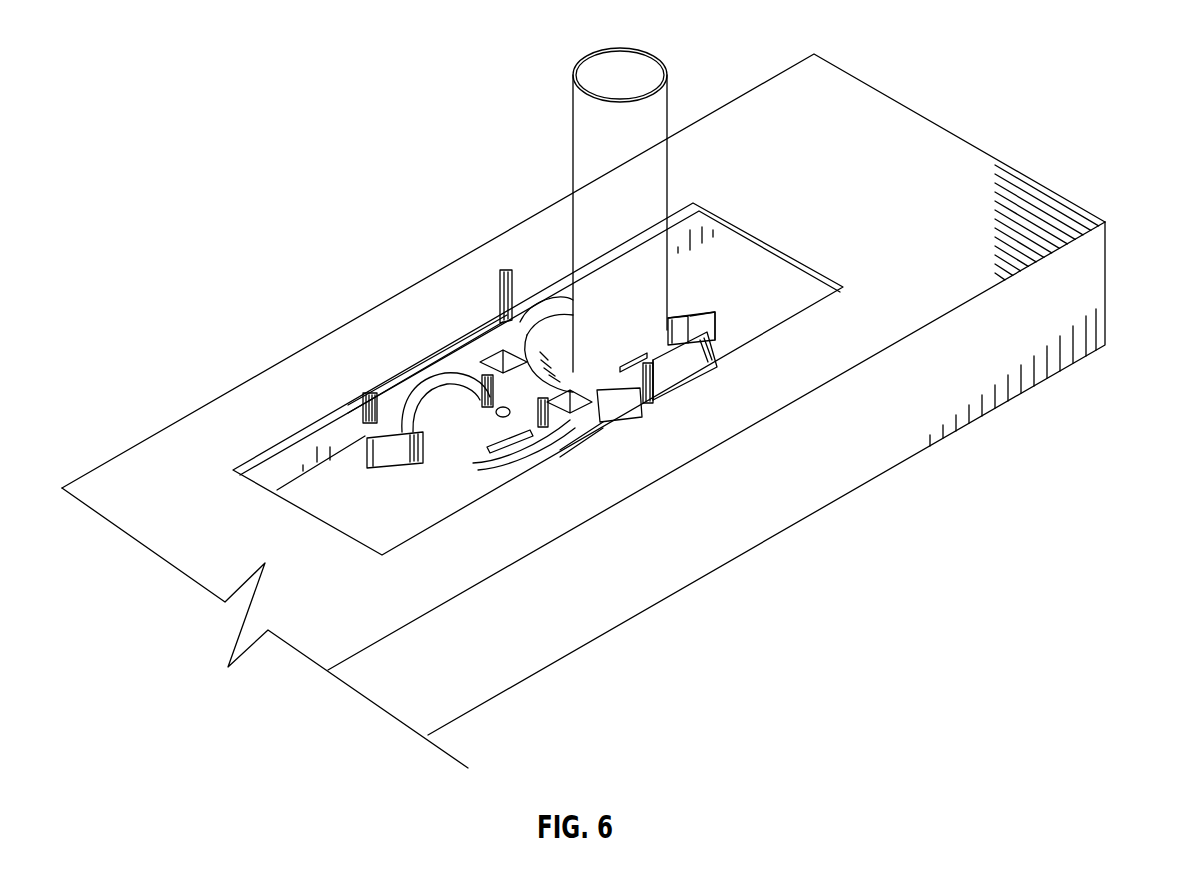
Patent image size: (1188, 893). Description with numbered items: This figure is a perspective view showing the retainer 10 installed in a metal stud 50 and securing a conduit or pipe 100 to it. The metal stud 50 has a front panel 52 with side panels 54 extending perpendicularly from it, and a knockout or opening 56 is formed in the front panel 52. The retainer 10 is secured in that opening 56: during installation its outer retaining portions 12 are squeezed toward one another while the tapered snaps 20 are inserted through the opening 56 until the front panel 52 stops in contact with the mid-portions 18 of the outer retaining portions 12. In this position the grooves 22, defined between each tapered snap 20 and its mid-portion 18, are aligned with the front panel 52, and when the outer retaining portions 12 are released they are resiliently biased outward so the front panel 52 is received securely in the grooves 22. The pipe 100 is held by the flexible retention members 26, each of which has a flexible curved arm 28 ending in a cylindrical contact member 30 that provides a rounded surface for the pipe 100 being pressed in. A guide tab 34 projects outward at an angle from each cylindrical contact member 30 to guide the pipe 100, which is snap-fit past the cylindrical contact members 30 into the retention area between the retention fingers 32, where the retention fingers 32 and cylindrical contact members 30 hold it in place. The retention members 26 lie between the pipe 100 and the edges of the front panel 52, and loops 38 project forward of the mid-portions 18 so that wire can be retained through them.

The retainer 10 is at (542, 360).
The outer retaining portion 12 is at (374, 402).
The mid-portion 18 is at (398, 380).
The tapered snap 20 is at (565, 258).
The groove 22 is at (518, 304).
The flexible retention member 26 is at (558, 318).
The flexible curved arm 28 is at (574, 288).
The cylindrical contact member 30 is at (676, 316).
The retention finger 32 is at (573, 342).
The guide tab 34 is at (683, 317).
The loop 38 is at (500, 427).
The metal stud 50 is at (613, 394).
The front panel 52 is at (965, 140).
The side panel 54 is at (1095, 290).
The opening 56 is at (770, 250).
The pipe 100 is at (582, 118).